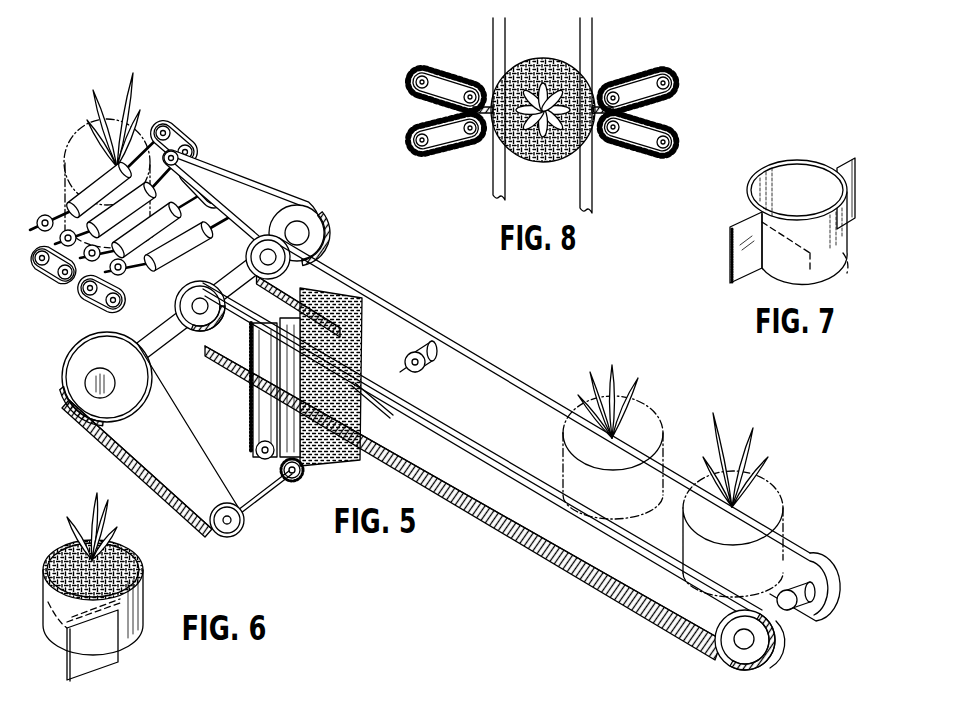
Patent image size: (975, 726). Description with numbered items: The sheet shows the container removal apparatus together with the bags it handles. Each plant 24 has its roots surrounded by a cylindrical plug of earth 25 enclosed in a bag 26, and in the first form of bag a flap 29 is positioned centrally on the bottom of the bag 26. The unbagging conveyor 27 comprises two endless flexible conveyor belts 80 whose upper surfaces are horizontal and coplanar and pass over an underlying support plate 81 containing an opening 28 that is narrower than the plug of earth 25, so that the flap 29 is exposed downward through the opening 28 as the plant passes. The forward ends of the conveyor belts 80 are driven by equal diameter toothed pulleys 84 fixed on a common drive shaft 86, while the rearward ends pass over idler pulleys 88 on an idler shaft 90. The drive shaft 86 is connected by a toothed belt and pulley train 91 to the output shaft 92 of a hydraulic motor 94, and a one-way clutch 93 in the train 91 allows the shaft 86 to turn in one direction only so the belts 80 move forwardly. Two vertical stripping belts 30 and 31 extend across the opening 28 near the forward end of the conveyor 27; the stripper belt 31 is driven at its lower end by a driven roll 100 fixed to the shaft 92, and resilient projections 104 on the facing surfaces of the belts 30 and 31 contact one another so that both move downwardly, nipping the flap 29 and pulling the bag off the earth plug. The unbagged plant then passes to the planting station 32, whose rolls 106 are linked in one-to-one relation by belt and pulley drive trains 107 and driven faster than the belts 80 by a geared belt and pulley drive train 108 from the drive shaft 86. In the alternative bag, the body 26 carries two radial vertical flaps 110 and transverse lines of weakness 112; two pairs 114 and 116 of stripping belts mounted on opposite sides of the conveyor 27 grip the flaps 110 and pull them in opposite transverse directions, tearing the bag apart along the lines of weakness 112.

In FIG. 6, the plant 24 is at (97, 525).
In FIG. 6, the plug of earth 25 is at (127, 551).
In FIG. 6, the bag 26 is at (143, 576).
In FIG. 7, the bag 26 is at (797, 159).
In FIG. 5, the unbagging conveyor 27 is at (458, 340).
In FIG. 8, the unbagging conveyor 27 is at (492, 190).
In FIG. 5, the opening 28 is at (372, 316).
In FIG. 6, the flap 29 is at (68, 667).
In FIG. 5, the stripping belt 30 is at (252, 428).
In FIG. 5, the stripping belt 31 is at (318, 462).
In FIG. 5, the planting station 32 is at (60, 188).
In FIG. 5, the conveyor belts 80 is at (517, 385).
In FIG. 5, the support plate 81 is at (477, 384).
In FIG. 5, the toothed pulleys 84 is at (176, 305).
In FIG. 5, the drive shaft 86 is at (170, 350).
In FIG. 5, the idler pulleys 88 is at (740, 652).
In FIG. 5, the idler shaft 90 is at (796, 620).
In FIG. 5, the belt and pulley train 91 is at (100, 442).
In FIG. 5, the output shaft 92 is at (256, 500).
In FIG. 5, the one-way clutch 93 is at (92, 383).
In FIG. 5, the hydraulic motor 94 is at (420, 346).
In FIG. 5, the driven roll 100 is at (294, 477).
In FIG. 5, the resilient projections 104 is at (342, 458).
In FIG. 5, the rolls 106 is at (188, 208).
In FIG. 5, the belt and pulley drive trains 107 is at (46, 277).
In FIG. 5, the belt and pulley drive train 108 is at (256, 171).
In FIG. 7, the flaps 110 is at (851, 160).
In FIG. 8, the flaps 110 is at (492, 100).
In FIG. 7, the lines of weakness 112 is at (813, 258).
In FIG. 8, the pair of stripping belts 114 is at (419, 110).
In FIG. 8, the pair of stripping belts 116 is at (663, 112).